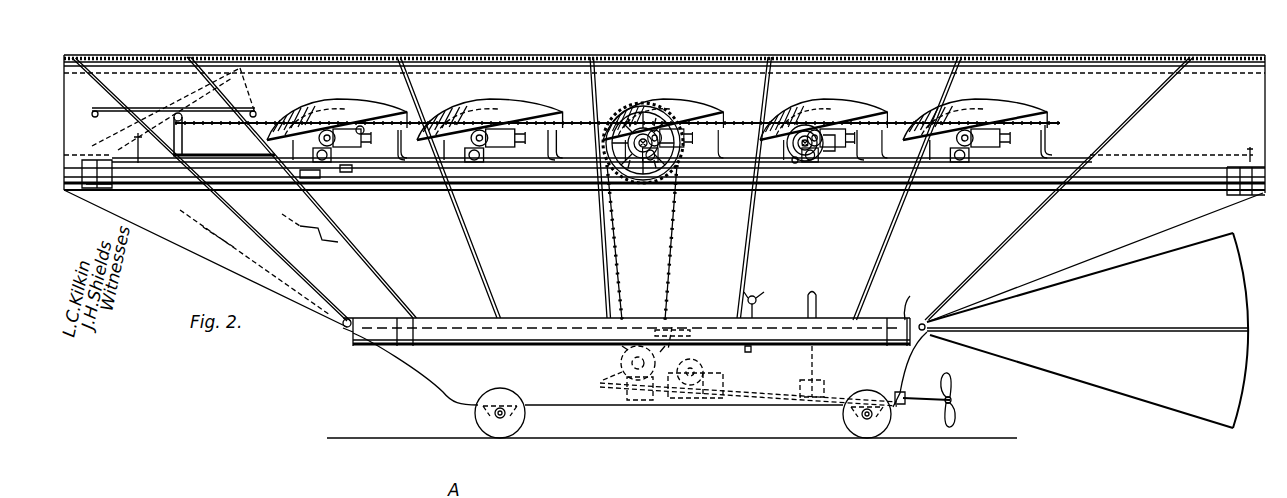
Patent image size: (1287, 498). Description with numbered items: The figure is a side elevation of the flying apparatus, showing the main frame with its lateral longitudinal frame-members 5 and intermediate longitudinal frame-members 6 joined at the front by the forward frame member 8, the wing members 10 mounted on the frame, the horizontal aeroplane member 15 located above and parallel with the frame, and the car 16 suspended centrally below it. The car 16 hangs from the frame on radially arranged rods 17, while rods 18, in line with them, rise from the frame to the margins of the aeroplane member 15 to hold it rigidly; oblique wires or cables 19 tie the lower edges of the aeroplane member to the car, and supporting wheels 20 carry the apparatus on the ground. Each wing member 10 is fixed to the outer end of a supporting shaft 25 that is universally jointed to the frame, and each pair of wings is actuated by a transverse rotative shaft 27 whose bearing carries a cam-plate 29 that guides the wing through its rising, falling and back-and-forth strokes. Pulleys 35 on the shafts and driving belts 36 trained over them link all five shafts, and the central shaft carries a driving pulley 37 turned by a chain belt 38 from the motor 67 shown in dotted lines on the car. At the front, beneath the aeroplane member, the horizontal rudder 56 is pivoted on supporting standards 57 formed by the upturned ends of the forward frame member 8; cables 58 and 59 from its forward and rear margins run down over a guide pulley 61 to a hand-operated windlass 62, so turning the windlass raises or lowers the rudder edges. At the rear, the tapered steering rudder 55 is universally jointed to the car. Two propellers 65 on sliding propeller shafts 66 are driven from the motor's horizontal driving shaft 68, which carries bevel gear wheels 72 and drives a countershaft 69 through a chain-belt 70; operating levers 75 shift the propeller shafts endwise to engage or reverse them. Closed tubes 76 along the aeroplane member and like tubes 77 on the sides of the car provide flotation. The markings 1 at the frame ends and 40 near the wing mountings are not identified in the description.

The end caps of frame 1 is at (674, 163).
The lateral longitudinal frame-member 5 is at (348, 173).
The intermediate longitudinal frame-member 6 is at (738, 163).
The forward frame member 8 is at (172, 182).
The wing member 10 is at (315, 99).
The aeroplane member 15 is at (677, 57).
The car 16 is at (672, 385).
The rods 17 is at (311, 285).
The rods 18 is at (226, 99).
The oblique wires or cables 19 is at (183, 246).
The supporting wheels 20 is at (512, 395).
The supporting shaft 25 is at (308, 176).
The rotative shaft 27 is at (808, 165).
The cam-plate 29 is at (362, 126).
The pulleys 35 is at (648, 126).
The driving belts 36 is at (427, 167).
The driving pulley 37 is at (648, 185).
The chain belt 38 is at (663, 280).
The clamps 40 is at (400, 158).
The rudder 55 is at (1087, 330).
The horizontal rudder 56 is at (135, 108).
The supporting standards 57 is at (184, 129).
The cable 58 is at (249, 262).
The cable 59 is at (380, 244).
The guide pulley 61 is at (345, 332).
The hand-operated windlass 62 is at (755, 293).
The propellers 65 is at (956, 399).
The propeller shafts 66 is at (762, 403).
The motor 67 is at (683, 406).
The horizontal driving shaft 68 is at (658, 408).
The countershaft 69 is at (602, 387).
The chain-belt 70 is at (674, 325).
The bevel gear wheels 72 is at (914, 313).
The operating levers 75 is at (817, 301).
The closed tubes 76 is at (962, 192).
The closed tubes 77 is at (552, 330).